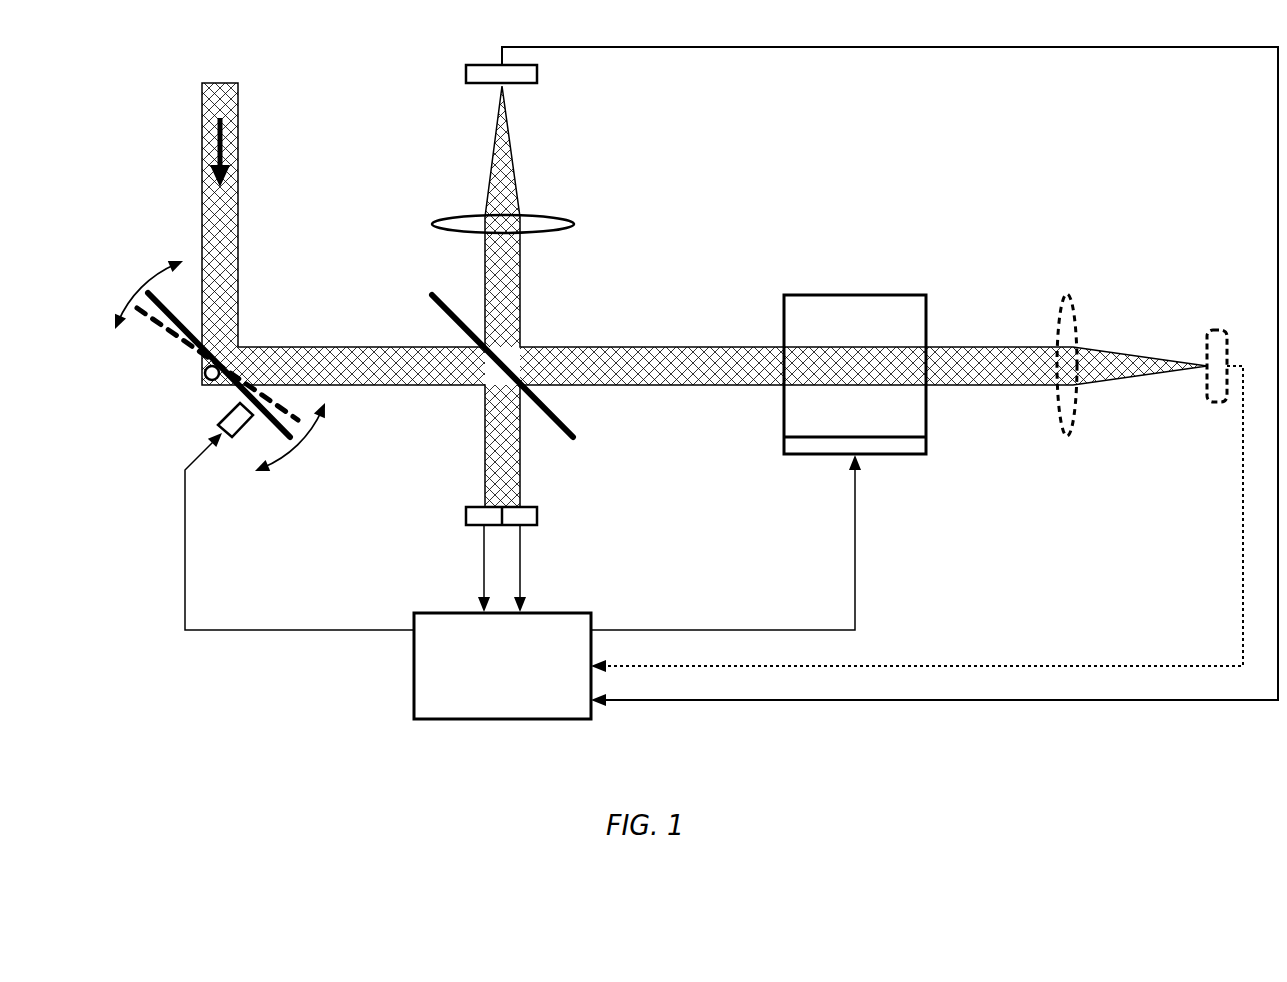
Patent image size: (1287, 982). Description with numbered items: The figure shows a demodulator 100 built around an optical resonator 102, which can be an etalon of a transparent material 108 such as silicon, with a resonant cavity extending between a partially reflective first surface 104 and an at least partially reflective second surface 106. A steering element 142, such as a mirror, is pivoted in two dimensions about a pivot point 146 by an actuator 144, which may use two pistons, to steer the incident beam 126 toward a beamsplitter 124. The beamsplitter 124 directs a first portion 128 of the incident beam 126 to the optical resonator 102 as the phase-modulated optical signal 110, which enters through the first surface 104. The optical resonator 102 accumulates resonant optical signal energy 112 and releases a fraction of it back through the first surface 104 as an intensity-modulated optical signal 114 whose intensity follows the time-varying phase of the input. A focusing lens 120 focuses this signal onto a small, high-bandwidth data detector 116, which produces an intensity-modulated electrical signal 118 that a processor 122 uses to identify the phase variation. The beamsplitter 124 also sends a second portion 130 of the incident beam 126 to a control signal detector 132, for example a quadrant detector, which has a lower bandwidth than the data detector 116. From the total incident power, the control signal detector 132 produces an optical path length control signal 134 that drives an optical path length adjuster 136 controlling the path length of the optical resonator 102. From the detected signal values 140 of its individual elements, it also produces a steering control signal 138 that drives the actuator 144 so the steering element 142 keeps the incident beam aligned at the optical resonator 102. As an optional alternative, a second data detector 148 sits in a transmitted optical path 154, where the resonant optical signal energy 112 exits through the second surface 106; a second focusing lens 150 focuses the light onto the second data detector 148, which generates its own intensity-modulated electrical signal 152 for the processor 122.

The demodulator 100 is at (105, 95).
The optical resonator 102 is at (855, 295).
The first surface 104 is at (770, 322).
The second surface 106 is at (940, 322).
The material 108 is at (836, 335).
The phase-modulated optical signal 110 is at (239, 117).
The resonant optical signal energy 112 is at (855, 415).
The intensity-modulated optical signal 114 is at (510, 150).
The data detector 116 is at (466, 72).
The intensity-modulated electrical signal 118 is at (642, 48).
The focusing lens 120 is at (432, 222).
The processor 122 is at (500, 720).
The beamsplitter 124 is at (430, 298).
The incident beam 126 is at (372, 385).
The first portion 128 is at (705, 385).
The second portion 130 is at (485, 433).
The control signal detector 132 is at (466, 515).
The optical path length control signal 134 is at (855, 507).
The optical path length adjuster 136 is at (928, 442).
The steering control signal 138 is at (185, 515).
The detected signal values 140 is at (520, 557).
The steering element 142 is at (173, 333).
The actuator 144 is at (222, 414).
The pivot point 146 is at (205, 374).
The second data detector 148 is at (1215, 330).
The second focusing lens 150 is at (1067, 294).
The intensity-modulated electrical signal 152 is at (1243, 468).
The transmitted optical path 154 is at (1000, 385).